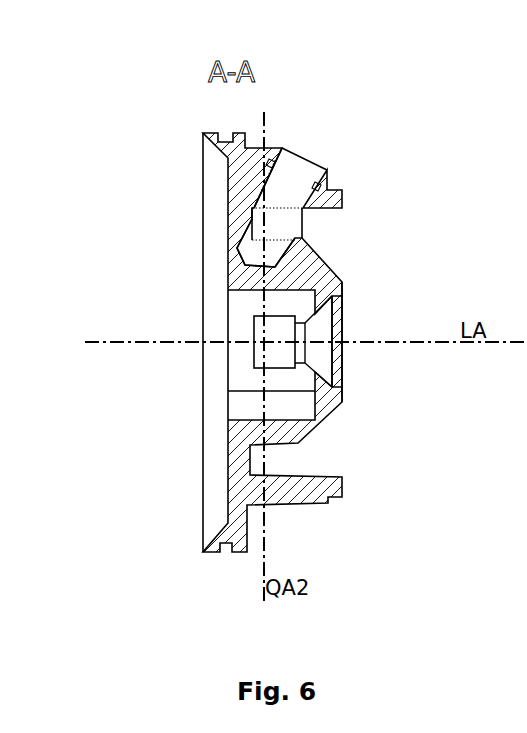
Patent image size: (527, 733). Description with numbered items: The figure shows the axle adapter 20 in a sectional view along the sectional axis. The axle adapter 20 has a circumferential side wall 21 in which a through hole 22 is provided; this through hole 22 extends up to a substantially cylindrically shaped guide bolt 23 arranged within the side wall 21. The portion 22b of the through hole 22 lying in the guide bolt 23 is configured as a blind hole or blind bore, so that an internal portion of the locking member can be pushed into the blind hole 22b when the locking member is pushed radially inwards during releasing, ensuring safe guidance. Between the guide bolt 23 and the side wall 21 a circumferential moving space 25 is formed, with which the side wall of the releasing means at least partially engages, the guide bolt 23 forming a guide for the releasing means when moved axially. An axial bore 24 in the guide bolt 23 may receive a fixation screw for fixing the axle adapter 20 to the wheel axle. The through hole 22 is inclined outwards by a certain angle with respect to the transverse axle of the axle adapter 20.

The axle adapter 20 is at (130, 120).
The side wall 21 is at (292, 505).
The through hole 22 is at (283, 172).
The blind hole 22b is at (248, 250).
The guide bolt 23 is at (315, 434).
The axial bore 24 is at (280, 357).
The circumferential moving space 25 is at (285, 227).